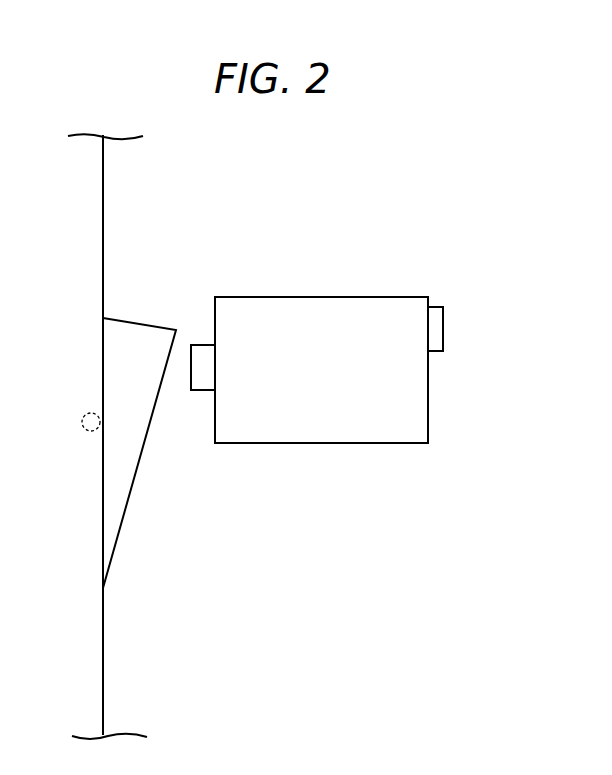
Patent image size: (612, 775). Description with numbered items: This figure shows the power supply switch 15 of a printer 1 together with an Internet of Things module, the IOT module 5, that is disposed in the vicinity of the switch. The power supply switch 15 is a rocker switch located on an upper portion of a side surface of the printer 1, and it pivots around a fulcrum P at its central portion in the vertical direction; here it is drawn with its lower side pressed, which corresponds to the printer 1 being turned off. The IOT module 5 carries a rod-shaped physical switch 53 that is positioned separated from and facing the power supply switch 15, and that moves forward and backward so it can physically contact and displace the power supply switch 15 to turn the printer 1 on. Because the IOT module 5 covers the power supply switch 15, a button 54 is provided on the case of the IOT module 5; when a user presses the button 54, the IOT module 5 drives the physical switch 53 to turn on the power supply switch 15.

The printer 1 is at (103, 164).
The power supply switch 15 is at (133, 322).
The IOT module 5 is at (313, 297).
The physical switch 53 is at (201, 390).
The button 54 is at (433, 307).
The fulcrum P is at (85, 413).